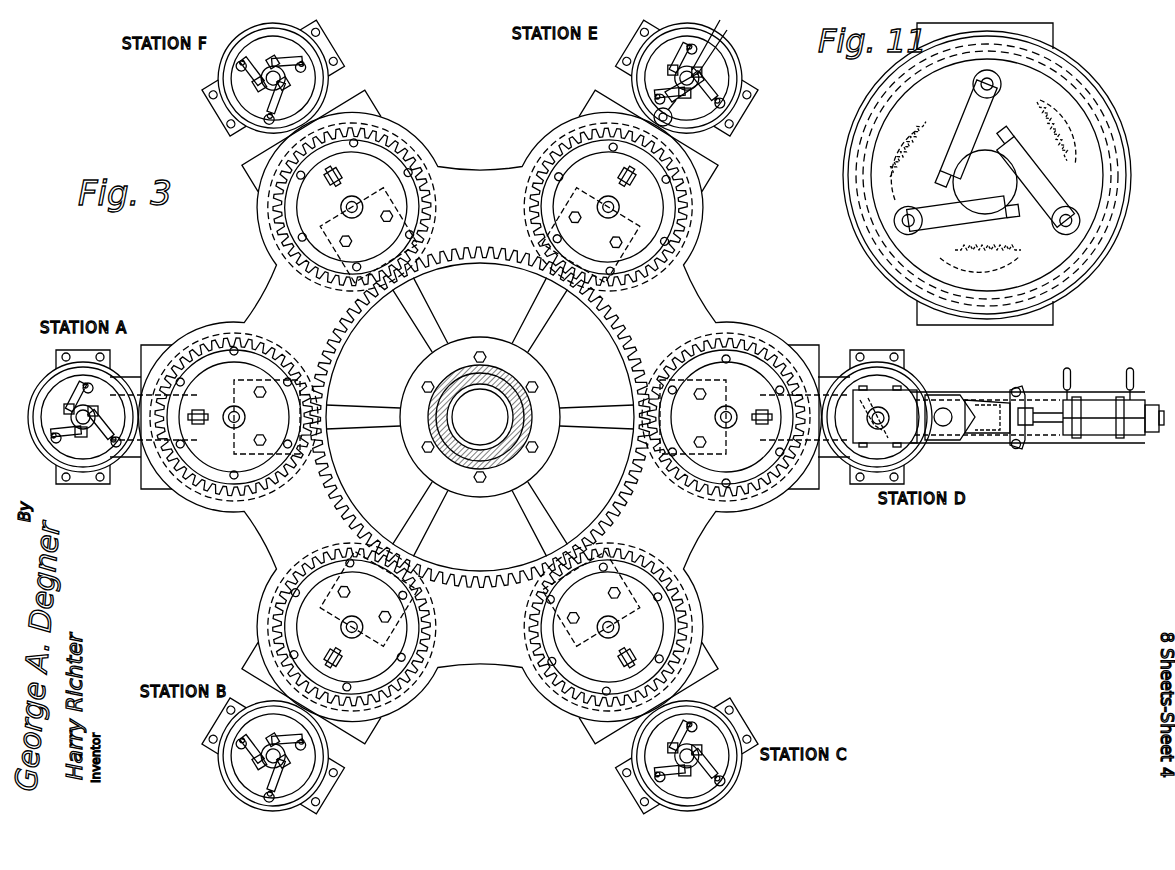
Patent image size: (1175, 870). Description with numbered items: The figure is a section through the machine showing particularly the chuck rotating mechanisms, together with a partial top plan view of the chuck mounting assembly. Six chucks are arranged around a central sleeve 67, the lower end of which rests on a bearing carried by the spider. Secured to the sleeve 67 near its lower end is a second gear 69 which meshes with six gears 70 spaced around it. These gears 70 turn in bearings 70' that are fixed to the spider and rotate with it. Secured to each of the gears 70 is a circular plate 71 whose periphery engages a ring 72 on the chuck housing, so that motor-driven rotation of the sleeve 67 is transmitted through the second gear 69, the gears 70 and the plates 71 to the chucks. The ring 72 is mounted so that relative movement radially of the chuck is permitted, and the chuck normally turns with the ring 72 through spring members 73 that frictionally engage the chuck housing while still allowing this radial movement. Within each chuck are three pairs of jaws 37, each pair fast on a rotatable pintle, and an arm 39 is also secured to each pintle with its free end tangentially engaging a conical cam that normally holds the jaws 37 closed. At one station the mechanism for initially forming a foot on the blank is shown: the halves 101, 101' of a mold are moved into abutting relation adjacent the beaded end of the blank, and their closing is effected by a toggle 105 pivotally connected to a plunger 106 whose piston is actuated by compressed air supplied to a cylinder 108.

In FIG. 3, the jaws 37 is at (665, 737).
In FIG. 11, the jaws 37 is at (930, 226).
In FIG. 11, the arm 39 is at (1010, 262).
In FIG. 3, the sleeve 67 is at (518, 453).
In FIG. 3, the second gear 69 is at (628, 503).
In FIG. 3, the gears 70 is at (480, 417).
In FIG. 3, the bearings 70' is at (463, 422).
In FIG. 3, the circular plate 71 is at (696, 515).
In FIG. 11, the ring 72 is at (882, 72).
In FIG. 11, the spring members 73 is at (864, 128).
In FIG. 3, the mold half 101 is at (869, 387).
In FIG. 3, the mold half 101' is at (855, 450).
In FIG. 3, the toggle 105 is at (1022, 440).
In FIG. 3, the plunger 106 is at (1045, 408).
In FIG. 3, the cylinder 108 is at (1100, 440).